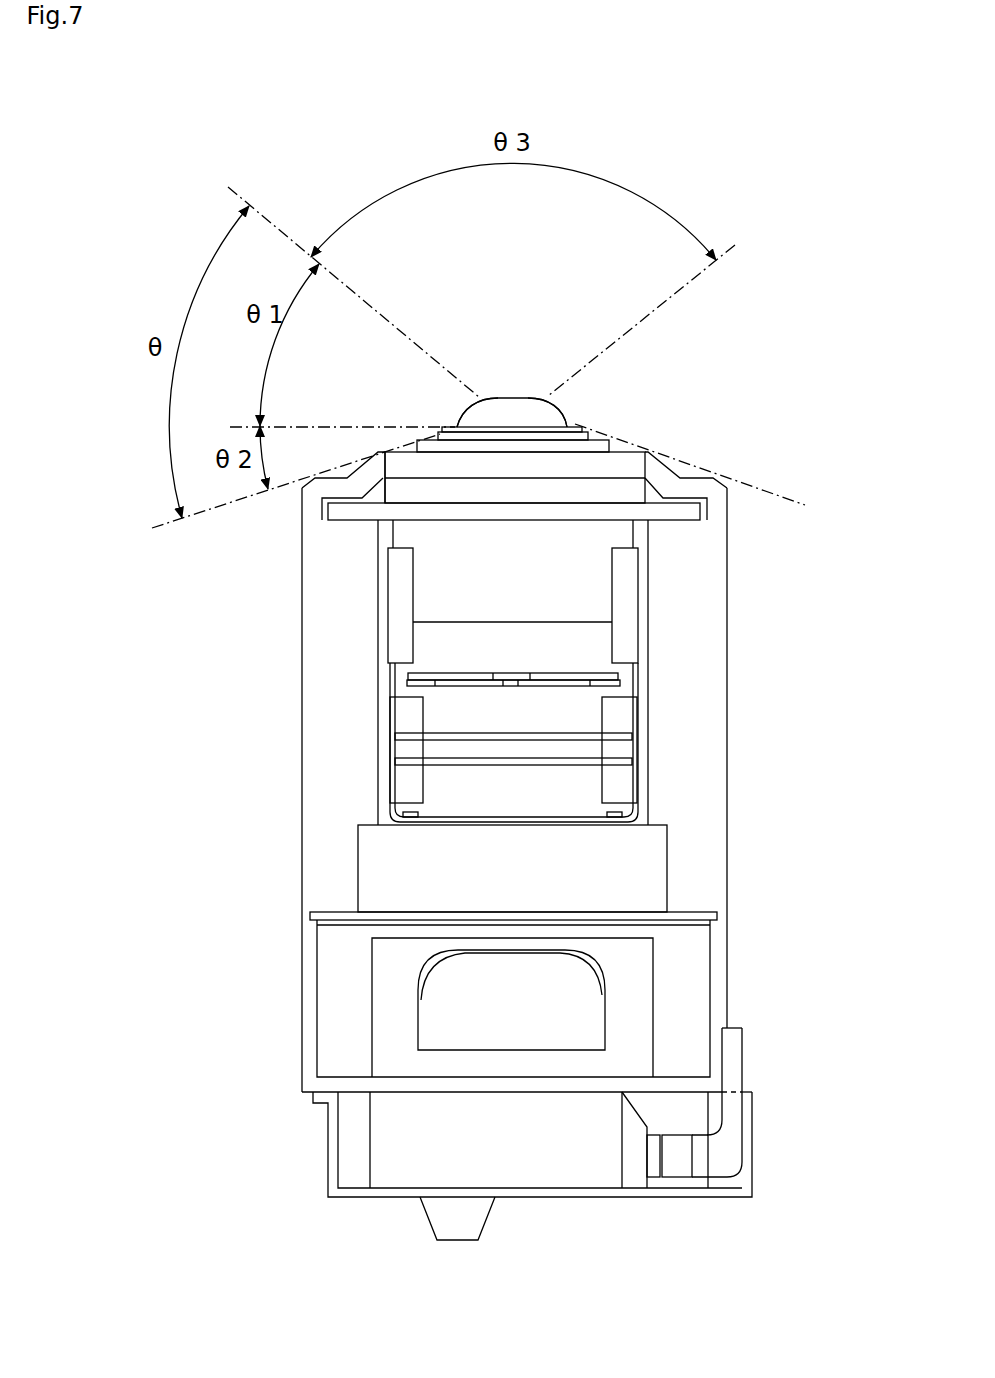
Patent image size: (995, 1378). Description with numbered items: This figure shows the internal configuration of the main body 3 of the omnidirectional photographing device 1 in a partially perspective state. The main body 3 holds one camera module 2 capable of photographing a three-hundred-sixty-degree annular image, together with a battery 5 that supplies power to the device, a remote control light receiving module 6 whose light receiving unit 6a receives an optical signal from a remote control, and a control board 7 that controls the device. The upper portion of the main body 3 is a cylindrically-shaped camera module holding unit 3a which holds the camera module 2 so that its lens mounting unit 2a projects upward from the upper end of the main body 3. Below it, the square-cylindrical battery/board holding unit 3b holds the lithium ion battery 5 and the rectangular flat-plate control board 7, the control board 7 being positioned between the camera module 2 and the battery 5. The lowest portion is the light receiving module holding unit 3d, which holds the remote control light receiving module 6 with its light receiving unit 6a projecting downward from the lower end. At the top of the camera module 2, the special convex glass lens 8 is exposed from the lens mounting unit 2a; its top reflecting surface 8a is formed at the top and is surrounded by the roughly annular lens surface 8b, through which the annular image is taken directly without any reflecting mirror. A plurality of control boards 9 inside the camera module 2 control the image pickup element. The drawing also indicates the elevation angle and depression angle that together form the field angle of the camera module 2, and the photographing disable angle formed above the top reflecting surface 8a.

The omnidirectional photographing device 1 is at (781, 199).
The camera module 2 is at (596, 460).
The lens mounting unit 2a is at (556, 428).
The main body 3 is at (728, 560).
The camera module holding unit 3a is at (719, 603).
The battery/board holding unit 3b is at (330, 832).
The light receiving module holding unit 3d is at (338, 1152).
The battery 5 is at (585, 1006).
The remote control light receiving module 6 is at (397, 1170).
The light receiving unit 6a is at (477, 1216).
The control board 7 is at (697, 906).
The lens 8 is at (538, 320).
The top reflecting surface 8a is at (520, 398).
The lens surface 8b is at (487, 410).
The control boards 9 is at (618, 676).